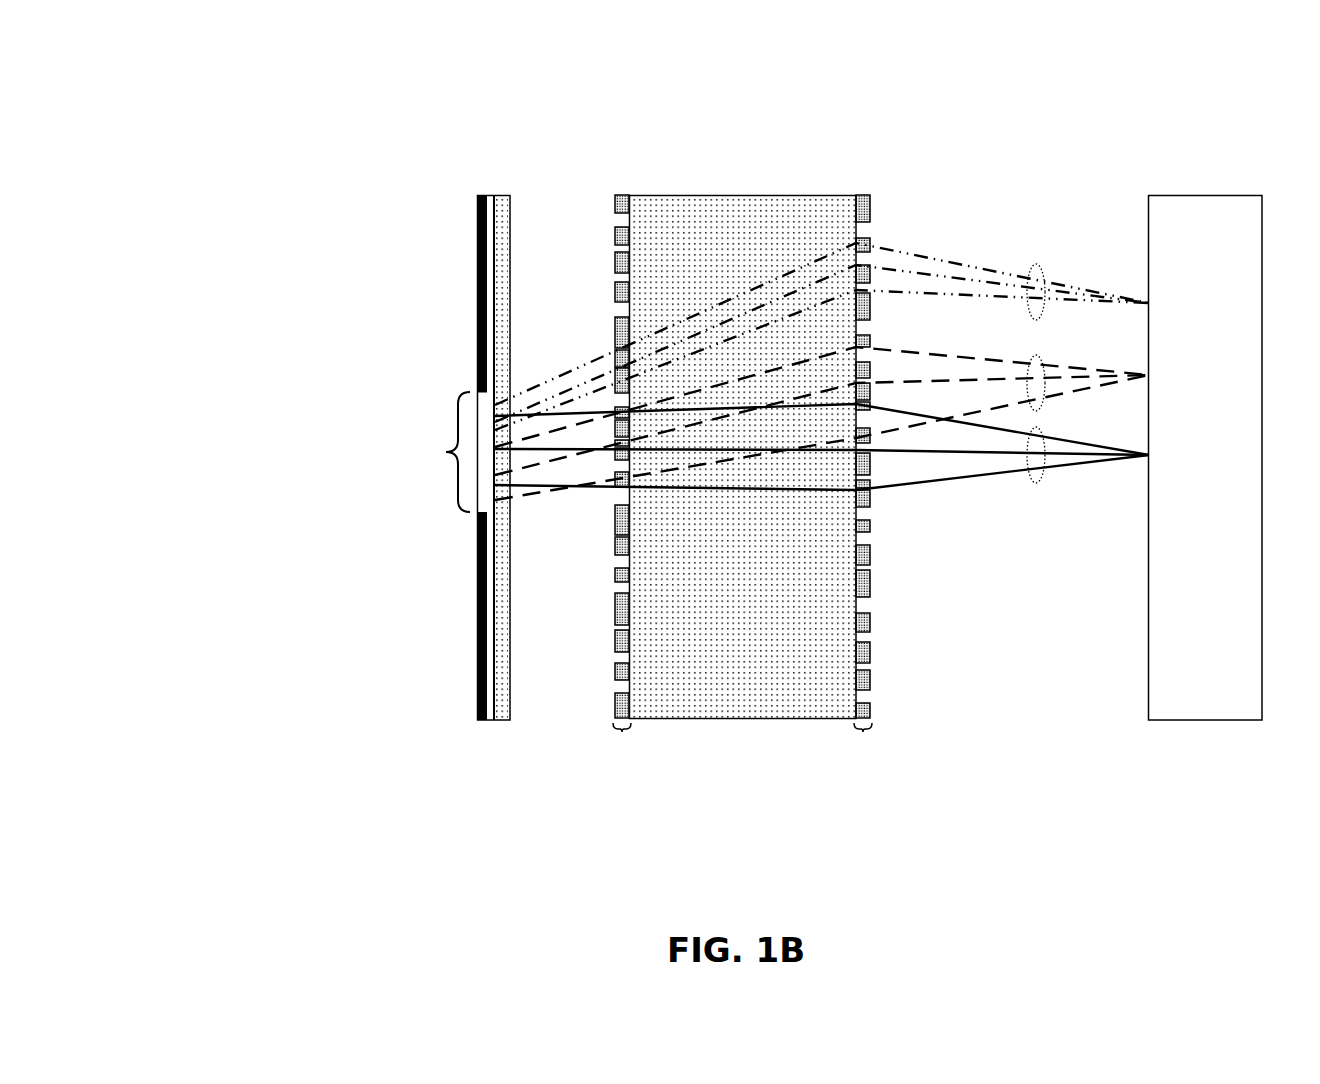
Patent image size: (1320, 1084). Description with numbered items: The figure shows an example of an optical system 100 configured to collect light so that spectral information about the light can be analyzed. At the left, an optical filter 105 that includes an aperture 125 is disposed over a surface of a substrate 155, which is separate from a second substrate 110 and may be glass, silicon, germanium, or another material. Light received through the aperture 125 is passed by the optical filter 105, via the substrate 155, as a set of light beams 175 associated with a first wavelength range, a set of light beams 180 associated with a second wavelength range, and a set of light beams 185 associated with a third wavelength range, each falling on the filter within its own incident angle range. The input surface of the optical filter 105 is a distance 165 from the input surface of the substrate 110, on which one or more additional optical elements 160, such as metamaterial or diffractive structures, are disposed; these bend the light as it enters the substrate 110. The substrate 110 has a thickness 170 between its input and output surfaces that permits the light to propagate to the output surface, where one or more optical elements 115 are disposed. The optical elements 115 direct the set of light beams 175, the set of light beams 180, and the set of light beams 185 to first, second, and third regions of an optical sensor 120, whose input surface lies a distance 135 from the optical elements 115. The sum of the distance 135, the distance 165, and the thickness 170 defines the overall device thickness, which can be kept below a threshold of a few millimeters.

The optical system 100 is at (251, 67).
The optical filter 105 is at (485, 726).
The substrate 110 is at (735, 702).
The optical elements 115 is at (863, 735).
The optical sensor 120 is at (1217, 691).
The aperture 125 is at (443, 450).
The distance 135 is at (859, 173).
The substrate 155 is at (504, 727).
The additional optical elements 160 is at (622, 735).
The distance 165 is at (487, 173).
The thickness 170 is at (855, 173).
The set of light beams 175 is at (1048, 486).
The set of light beams 180 is at (1048, 411).
The set of light beams 185 is at (1048, 319).